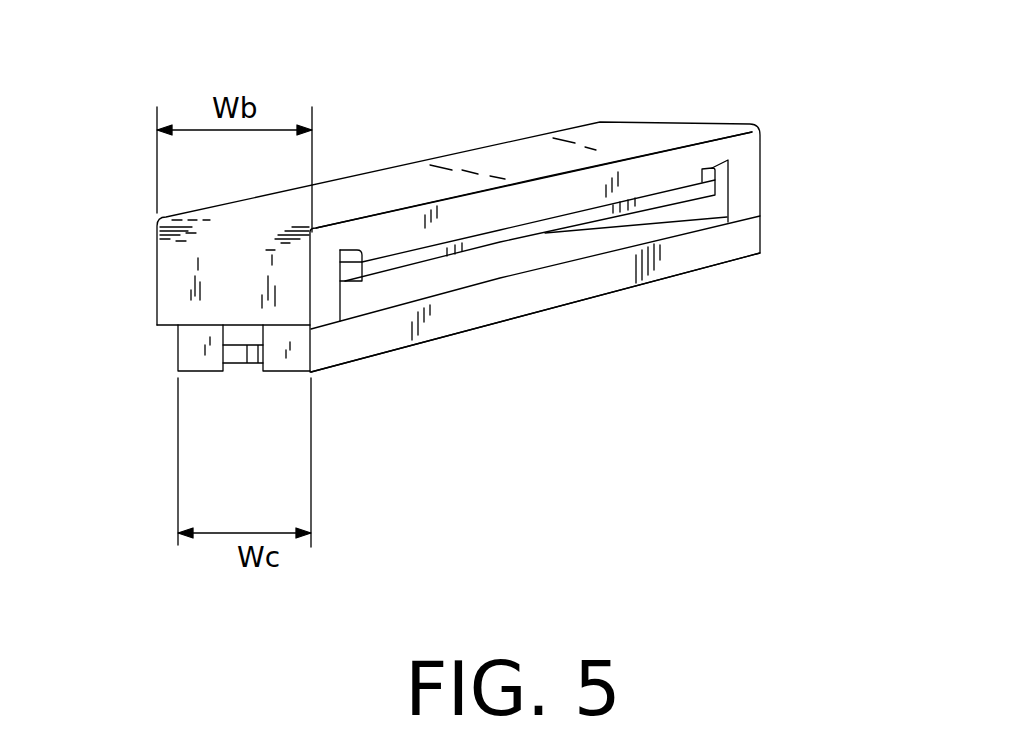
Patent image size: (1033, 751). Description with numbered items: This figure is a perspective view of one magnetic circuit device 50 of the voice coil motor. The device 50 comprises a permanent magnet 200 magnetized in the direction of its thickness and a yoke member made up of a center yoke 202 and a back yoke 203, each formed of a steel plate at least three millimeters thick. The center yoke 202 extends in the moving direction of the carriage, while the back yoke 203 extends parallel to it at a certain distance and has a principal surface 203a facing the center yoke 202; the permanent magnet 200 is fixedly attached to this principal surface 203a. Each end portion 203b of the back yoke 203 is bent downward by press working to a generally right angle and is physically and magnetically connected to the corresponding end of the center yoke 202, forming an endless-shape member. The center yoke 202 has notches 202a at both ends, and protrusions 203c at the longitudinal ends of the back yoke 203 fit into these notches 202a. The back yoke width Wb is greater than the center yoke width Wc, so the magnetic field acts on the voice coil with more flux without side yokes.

The magnetic circuit device 50 is at (713, 278).
The permanent magnet 200 is at (576, 178).
The center yoke 202 is at (467, 333).
The notch 202a is at (237, 364).
The back yoke 203 is at (488, 160).
The principal surface 203a is at (576, 175).
The end portion 203b is at (185, 288).
The protrusion 203c is at (248, 329).